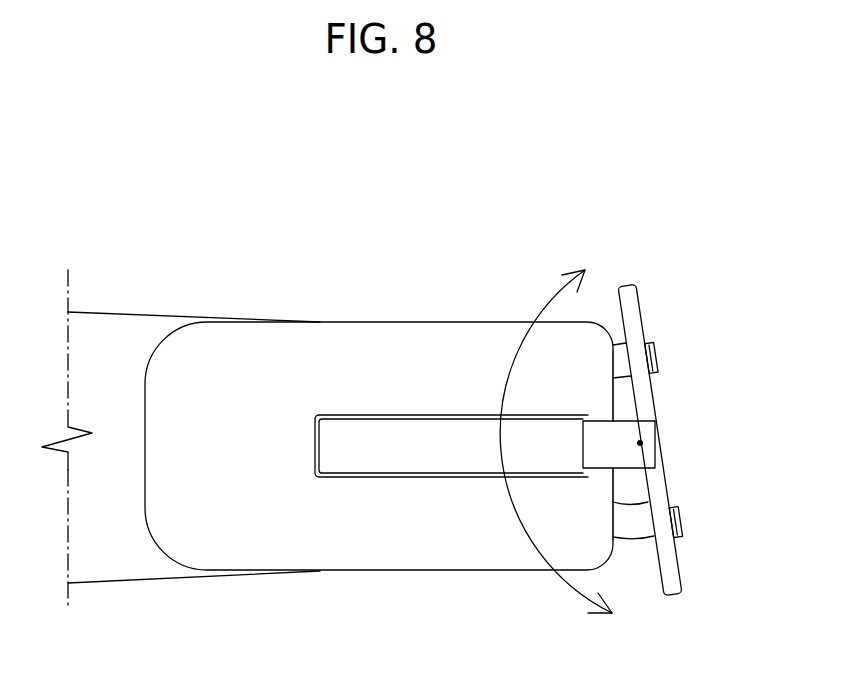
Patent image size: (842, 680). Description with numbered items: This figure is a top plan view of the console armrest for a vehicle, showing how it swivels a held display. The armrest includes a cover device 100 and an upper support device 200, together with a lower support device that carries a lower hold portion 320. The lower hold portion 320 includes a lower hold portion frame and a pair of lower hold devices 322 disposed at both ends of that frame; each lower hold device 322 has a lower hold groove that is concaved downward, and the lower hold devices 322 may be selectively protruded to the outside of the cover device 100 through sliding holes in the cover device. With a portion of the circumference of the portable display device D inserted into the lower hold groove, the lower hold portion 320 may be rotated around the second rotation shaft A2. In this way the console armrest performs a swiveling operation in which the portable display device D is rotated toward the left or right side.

The cover device 100 is at (373, 294).
The upper support device 200 is at (422, 429).
The second rotation shaft A2 is at (640, 443).
The lower hold device 322 is at (632, 508).
The lower hold portion 320 is at (634, 552).
The portable display device D is at (633, 307).